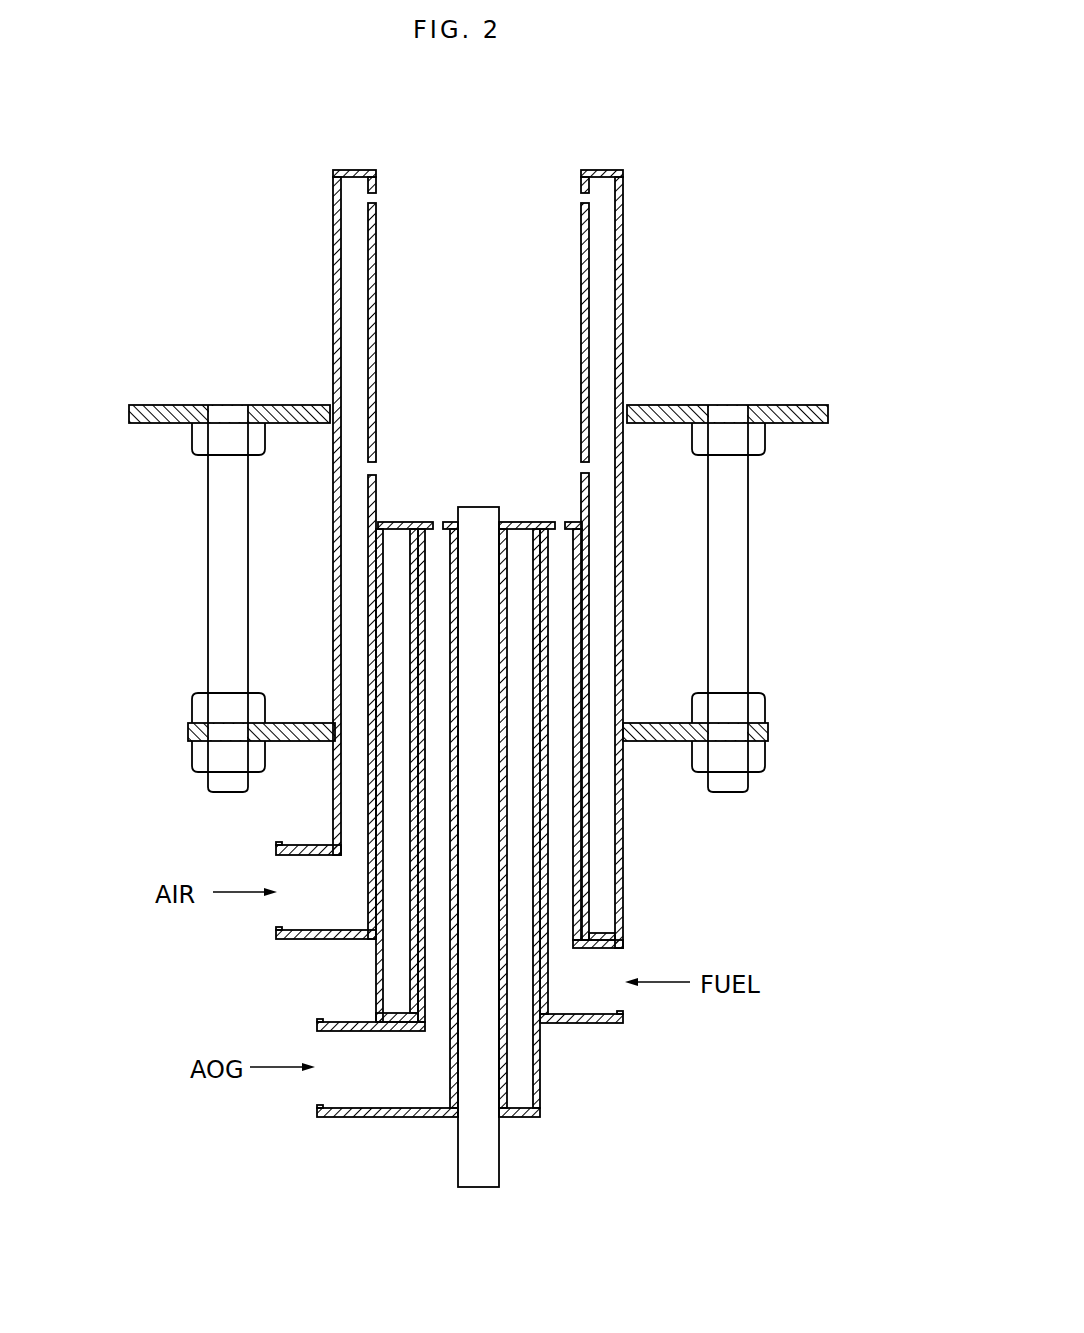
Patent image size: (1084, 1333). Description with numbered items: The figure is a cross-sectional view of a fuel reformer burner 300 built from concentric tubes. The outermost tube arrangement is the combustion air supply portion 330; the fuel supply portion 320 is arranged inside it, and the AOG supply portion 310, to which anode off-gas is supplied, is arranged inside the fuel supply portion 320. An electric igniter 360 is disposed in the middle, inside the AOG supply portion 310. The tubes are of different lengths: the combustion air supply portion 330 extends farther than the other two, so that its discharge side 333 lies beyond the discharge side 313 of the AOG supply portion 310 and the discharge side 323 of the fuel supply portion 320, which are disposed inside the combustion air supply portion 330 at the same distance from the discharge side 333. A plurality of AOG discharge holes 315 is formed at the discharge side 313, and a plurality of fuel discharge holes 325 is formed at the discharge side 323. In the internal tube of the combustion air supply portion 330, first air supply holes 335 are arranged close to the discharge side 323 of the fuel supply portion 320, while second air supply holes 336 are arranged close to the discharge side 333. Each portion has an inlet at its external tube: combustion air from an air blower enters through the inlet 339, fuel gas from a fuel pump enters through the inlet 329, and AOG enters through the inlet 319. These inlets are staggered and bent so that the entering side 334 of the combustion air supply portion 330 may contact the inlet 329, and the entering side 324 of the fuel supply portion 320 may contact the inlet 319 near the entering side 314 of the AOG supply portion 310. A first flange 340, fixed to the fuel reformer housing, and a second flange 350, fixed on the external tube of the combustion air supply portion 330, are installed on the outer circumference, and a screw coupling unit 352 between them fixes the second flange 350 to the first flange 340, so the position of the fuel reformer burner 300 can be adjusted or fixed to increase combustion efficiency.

The fuel reformer burner 300 is at (473, 119).
The AOG supply portion 310 is at (336, 1136).
The discharge side 313 is at (515, 520).
The entering side 314 is at (520, 1119).
The AOG discharge holes 315 is at (447, 520).
The inlet 319 is at (415, 1119).
The fuel supply portion 320 is at (645, 1026).
The discharge side 323 is at (405, 520).
The entering side 324 is at (400, 1012).
The fuel discharge holes 325 is at (562, 520).
The inlet 329 is at (600, 1025).
The combustion air supply portion 330 is at (640, 316).
The discharge side 333 is at (601, 170).
The entering side 334 is at (348, 937).
The first air supply holes 335 is at (372, 462).
The second air supply holes 336 is at (372, 196).
The inlet 339 is at (310, 846).
The first flange 340 is at (830, 414).
The second flange 350 is at (770, 730).
The screw coupling unit 352 is at (198, 579).
The electric igniter 360 is at (478, 1189).